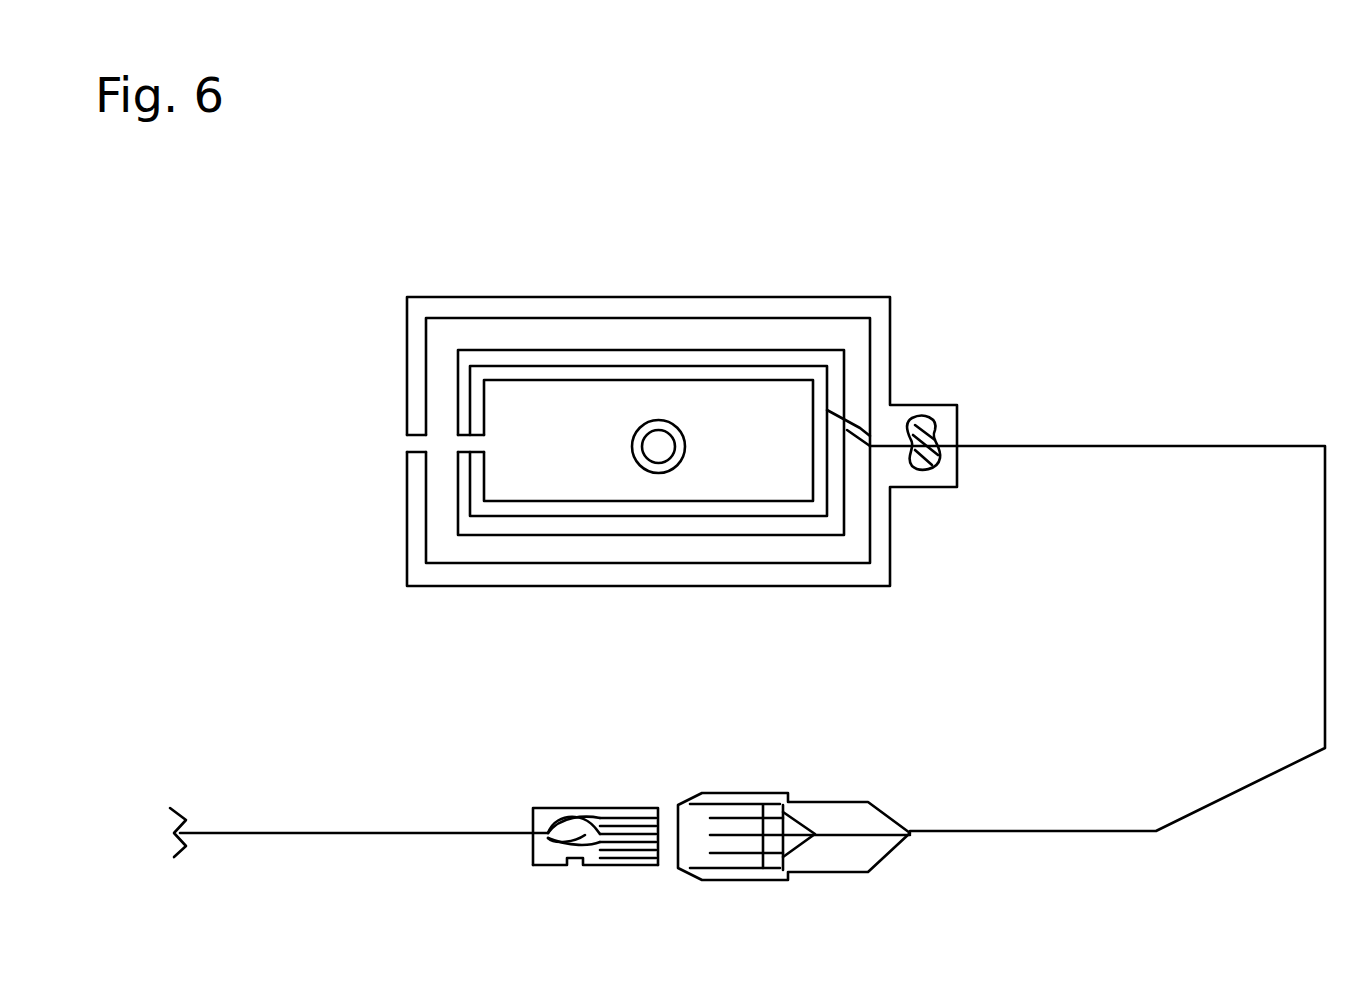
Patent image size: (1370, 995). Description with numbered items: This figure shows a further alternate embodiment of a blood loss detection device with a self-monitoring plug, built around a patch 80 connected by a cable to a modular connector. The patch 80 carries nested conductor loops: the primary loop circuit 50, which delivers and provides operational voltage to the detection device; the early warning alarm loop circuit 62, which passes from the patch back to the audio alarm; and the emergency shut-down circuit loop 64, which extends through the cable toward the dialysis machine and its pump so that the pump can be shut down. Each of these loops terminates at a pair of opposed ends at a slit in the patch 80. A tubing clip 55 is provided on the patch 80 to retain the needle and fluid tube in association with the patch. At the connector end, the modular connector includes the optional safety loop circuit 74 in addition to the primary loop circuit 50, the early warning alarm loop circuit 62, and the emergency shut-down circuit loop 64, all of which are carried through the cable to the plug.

The primary loop circuit 50 is at (497, 517).
The tubing clip 55 is at (940, 469).
The early warning alarm loop circuit 62 is at (460, 523).
The emergency shut-down circuit loop 64 is at (826, 561).
The safety loop circuit 74 is at (557, 827).
The patch 80 is at (1063, 273).